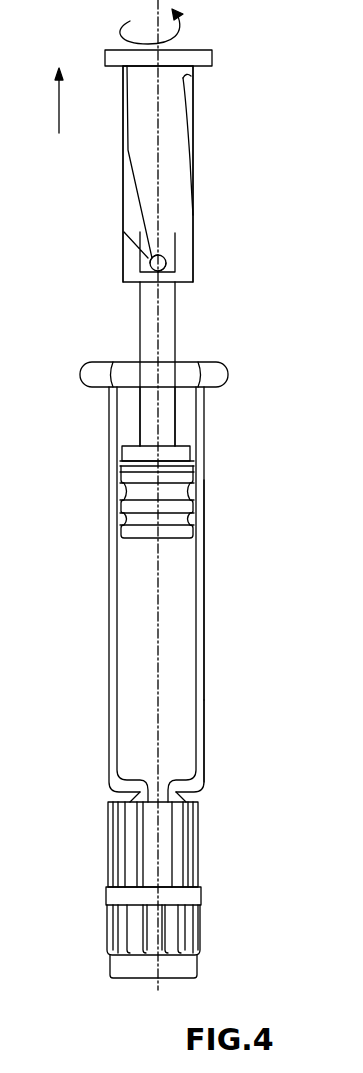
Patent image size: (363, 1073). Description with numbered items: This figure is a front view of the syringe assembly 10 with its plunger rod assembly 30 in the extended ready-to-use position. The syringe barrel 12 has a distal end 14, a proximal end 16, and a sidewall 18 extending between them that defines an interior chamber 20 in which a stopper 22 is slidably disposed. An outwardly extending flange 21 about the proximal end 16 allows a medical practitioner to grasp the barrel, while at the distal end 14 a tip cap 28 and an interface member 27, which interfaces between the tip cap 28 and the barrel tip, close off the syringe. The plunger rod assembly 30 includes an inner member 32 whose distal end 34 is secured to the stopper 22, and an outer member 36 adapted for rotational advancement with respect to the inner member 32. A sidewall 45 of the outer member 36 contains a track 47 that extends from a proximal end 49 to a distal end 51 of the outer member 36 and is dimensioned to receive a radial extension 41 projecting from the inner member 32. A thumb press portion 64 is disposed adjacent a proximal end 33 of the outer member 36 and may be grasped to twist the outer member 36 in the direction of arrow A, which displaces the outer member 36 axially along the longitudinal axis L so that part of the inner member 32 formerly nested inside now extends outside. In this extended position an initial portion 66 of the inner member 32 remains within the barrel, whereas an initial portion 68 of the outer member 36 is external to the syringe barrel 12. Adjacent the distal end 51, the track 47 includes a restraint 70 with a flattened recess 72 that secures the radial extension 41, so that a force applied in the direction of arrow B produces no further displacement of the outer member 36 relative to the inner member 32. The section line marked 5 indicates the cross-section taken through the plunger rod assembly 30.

The syringe assembly 10 is at (175, 511).
The syringe barrel 12 is at (204, 608).
The distal end 14 is at (194, 796).
The proximal end 16 is at (204, 405).
The sidewall 18 is at (204, 683).
The interior chamber 20 is at (181, 692).
The flange 21 is at (226, 375).
The stopper 22 is at (135, 498).
The interface member 27 is at (195, 935).
The tip cap 28 is at (192, 858).
The plunger rod assembly 30 is at (180, 218).
The inner member 32 is at (166, 310).
The proximal end of the outer member 33 is at (125, 78).
The distal end of the inner member 34 is at (148, 446).
The outer member 36 is at (178, 172).
The radial extension 41 is at (150, 256).
The sidewall of the outer member 45 is at (186, 95).
The track 47 is at (132, 220).
The proximal end of the outer member 49 is at (183, 78).
The distal end of the outer member 51 is at (138, 264).
The thumb press portion 64 is at (207, 58).
The initial portion of the inner member 66 is at (150, 418).
The initial portion of the outer member 68 is at (178, 268).
The restraint 70 is at (165, 256).
The flattened recess 72 is at (162, 270).
The arrow A is at (130, 21).
The arrow B is at (58, 100).
The longitudinal axis L is at (155, 642).
The section line for FIG. 5 is at (115, 1010).